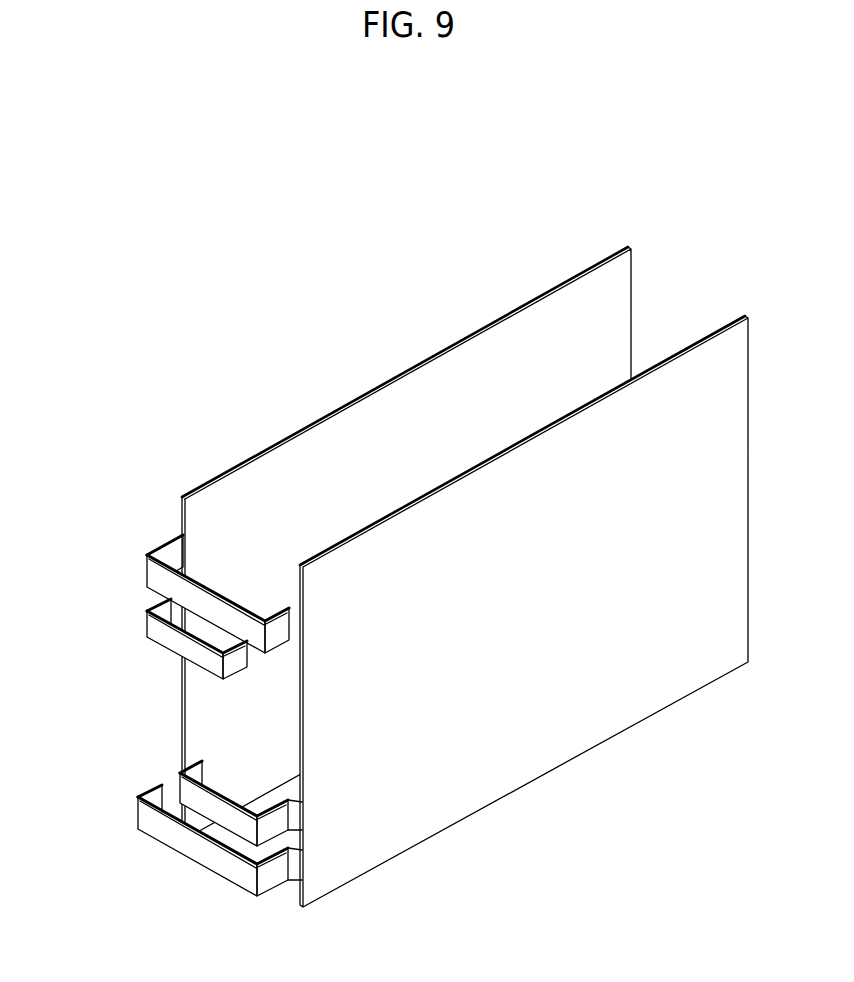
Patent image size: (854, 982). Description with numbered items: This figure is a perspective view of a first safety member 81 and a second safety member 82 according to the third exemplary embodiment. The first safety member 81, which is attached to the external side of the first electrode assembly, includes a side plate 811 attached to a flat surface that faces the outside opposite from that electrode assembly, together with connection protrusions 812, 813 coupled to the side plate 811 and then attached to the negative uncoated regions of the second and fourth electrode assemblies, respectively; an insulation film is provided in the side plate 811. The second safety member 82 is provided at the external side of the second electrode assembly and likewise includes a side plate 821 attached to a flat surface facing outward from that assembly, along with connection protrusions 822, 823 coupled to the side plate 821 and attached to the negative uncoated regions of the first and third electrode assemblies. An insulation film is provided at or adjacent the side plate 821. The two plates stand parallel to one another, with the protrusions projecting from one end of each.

The first safety member 81 is at (524, 611).
The side plate 811 is at (457, 790).
The connection protrusion 812 is at (206, 853).
The connection protrusion 813 is at (192, 790).
The second safety member 82 is at (406, 543).
The side plate 821 is at (281, 441).
The connection protrusion 822 is at (160, 578).
The connection protrusion 823 is at (158, 630).